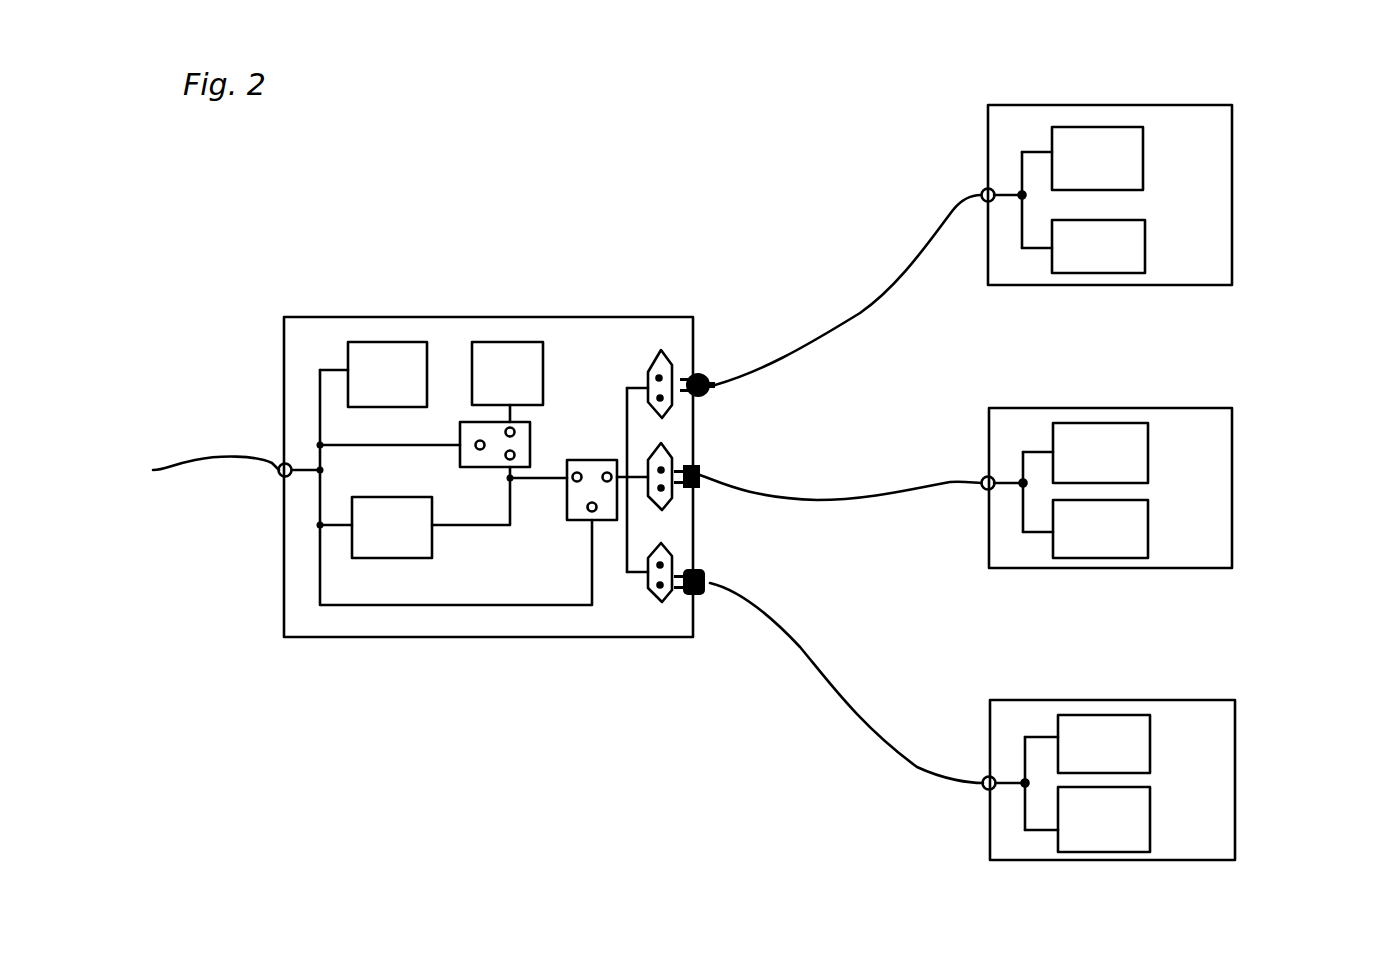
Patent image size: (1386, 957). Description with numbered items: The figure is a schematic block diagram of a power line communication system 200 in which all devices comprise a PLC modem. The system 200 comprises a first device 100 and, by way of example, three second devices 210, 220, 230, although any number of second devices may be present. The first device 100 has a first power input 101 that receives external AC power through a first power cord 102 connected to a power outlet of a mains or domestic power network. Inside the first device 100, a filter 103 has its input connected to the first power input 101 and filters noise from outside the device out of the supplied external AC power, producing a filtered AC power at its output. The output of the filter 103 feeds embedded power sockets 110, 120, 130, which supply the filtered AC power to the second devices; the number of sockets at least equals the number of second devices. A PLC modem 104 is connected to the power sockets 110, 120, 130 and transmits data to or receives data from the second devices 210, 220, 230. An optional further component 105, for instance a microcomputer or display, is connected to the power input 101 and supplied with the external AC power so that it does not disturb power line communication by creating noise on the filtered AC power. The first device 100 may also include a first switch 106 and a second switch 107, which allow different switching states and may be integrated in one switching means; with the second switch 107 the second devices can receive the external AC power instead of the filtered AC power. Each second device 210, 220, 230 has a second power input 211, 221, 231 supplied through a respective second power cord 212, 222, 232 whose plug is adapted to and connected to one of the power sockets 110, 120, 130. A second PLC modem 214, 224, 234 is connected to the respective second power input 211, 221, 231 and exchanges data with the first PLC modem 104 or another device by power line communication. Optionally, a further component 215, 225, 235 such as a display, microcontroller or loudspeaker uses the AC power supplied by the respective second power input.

The power line communication system 200 is at (582, 105).
The first device 100 is at (462, 317).
The first power input 101 is at (280, 480).
The first power cord 102 is at (182, 462).
The filter 103 is at (390, 558).
The PLC modem 104 is at (503, 340).
The further component 105 is at (372, 342).
The first switch 106 is at (532, 437).
The second switch 107 is at (572, 523).
The power socket 110 is at (668, 352).
The power socket 120 is at (672, 455).
The power socket 130 is at (672, 552).
The second device 210 is at (1232, 167).
The second power input 211 is at (982, 186).
The second power cord 212 is at (863, 308).
The second PLC modem 214 is at (1085, 127).
The further component 215 is at (1110, 273).
The second device 220 is at (1232, 483).
The second power input 221 is at (983, 476).
The second power cord 222 is at (850, 497).
The second PLC modem 224 is at (1087, 423).
The further component 225 is at (1128, 558).
The second device 230 is at (1235, 770).
The second power input 231 is at (983, 777).
The second power cord 232 is at (828, 687).
The second PLC modem 234 is at (1097, 715).
The further component 235 is at (1128, 852).